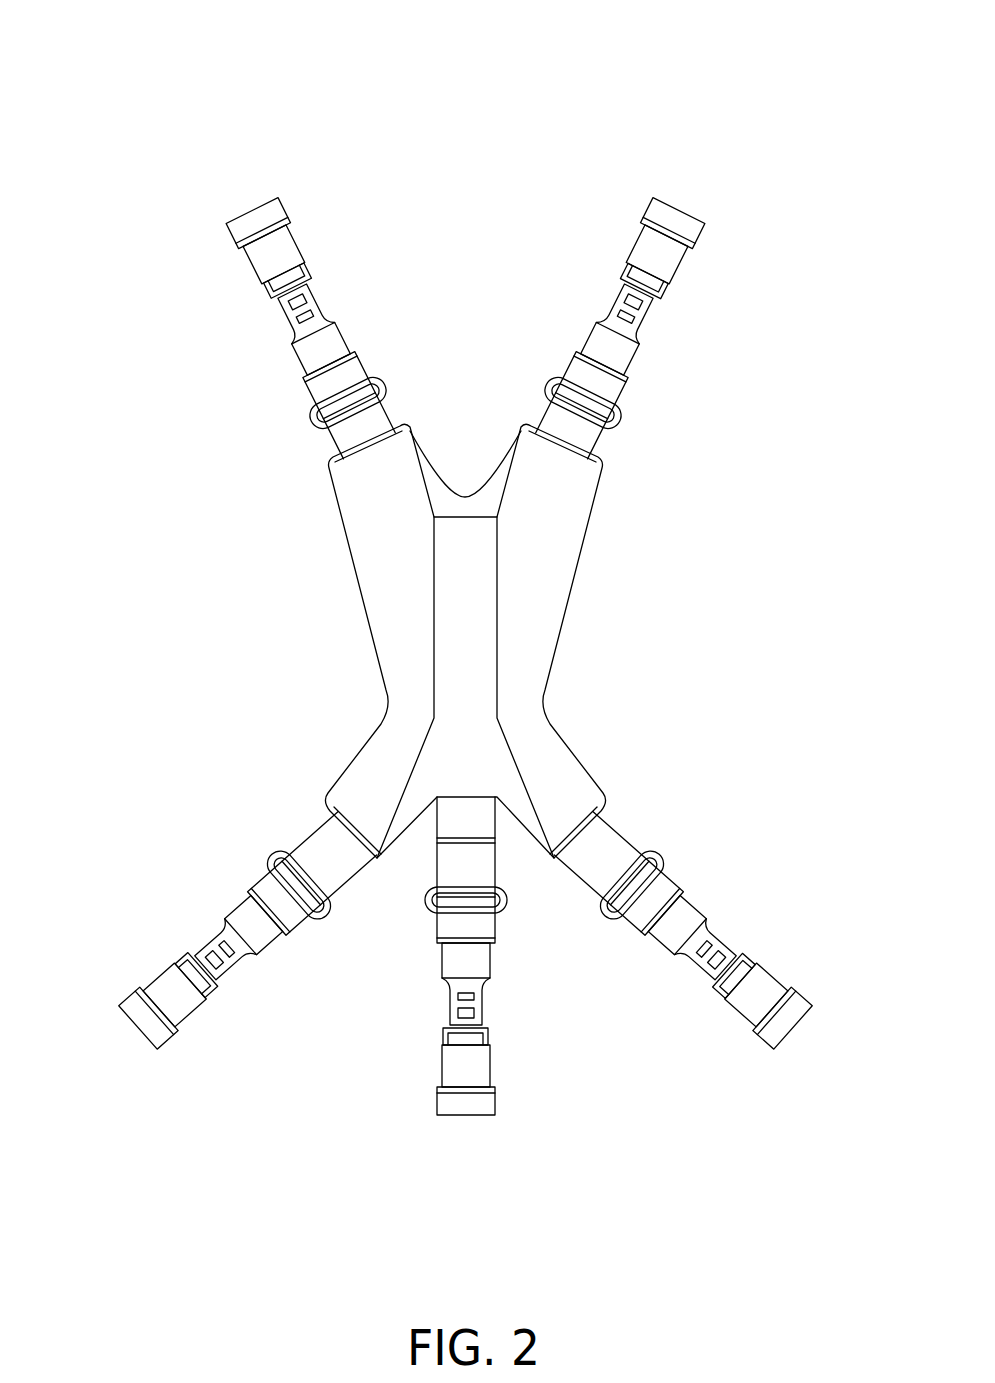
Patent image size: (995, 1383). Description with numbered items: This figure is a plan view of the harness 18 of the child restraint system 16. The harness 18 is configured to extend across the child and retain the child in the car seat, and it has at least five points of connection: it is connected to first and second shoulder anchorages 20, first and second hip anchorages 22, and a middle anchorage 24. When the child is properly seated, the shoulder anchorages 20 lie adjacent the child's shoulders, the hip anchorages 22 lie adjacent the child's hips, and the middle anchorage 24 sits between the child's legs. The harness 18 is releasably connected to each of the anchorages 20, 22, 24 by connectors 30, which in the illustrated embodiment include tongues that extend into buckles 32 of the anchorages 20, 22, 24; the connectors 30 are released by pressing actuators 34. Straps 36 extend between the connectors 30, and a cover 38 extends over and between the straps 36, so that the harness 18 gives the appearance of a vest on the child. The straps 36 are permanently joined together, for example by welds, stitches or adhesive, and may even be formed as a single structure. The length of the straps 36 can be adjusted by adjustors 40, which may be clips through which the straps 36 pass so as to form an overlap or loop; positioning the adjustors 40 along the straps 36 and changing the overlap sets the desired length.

The child restraint system 16 is at (734, 66).
The harness 18 is at (487, 197).
The shoulder anchorages 20 is at (271, 180).
The hip anchorages 22 is at (179, 1072).
The middle anchorage 24 is at (499, 1137).
The connectors 30 is at (293, 320).
The buckles 32 is at (154, 968).
The actuators 34 is at (278, 283).
The straps 36 is at (588, 380).
The cover 38 is at (362, 597).
The adjustors 40 is at (560, 388).